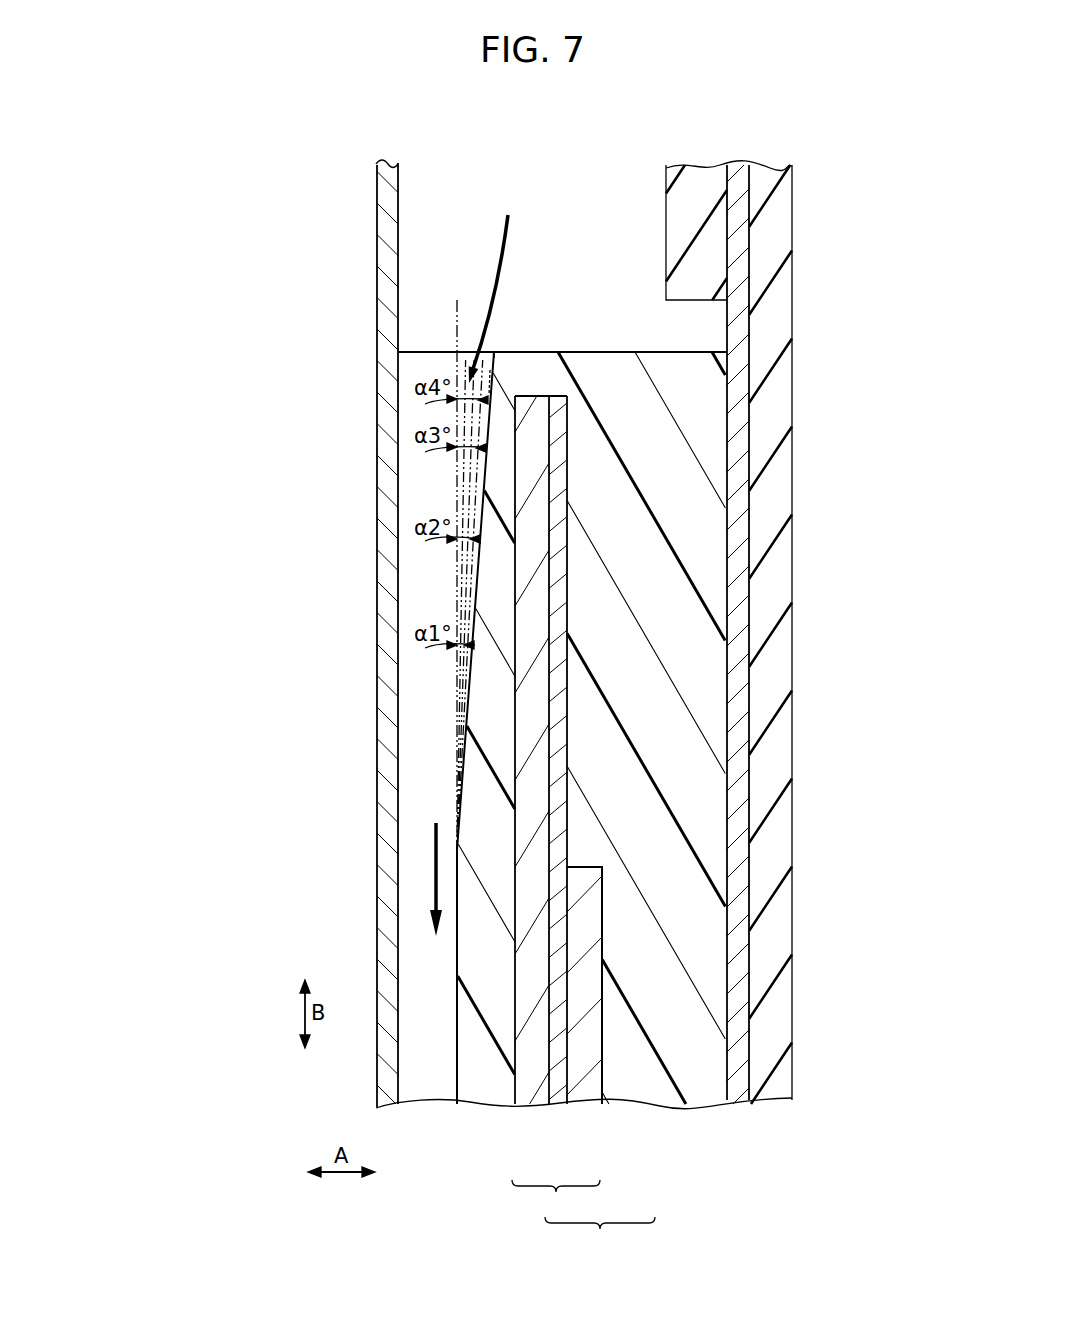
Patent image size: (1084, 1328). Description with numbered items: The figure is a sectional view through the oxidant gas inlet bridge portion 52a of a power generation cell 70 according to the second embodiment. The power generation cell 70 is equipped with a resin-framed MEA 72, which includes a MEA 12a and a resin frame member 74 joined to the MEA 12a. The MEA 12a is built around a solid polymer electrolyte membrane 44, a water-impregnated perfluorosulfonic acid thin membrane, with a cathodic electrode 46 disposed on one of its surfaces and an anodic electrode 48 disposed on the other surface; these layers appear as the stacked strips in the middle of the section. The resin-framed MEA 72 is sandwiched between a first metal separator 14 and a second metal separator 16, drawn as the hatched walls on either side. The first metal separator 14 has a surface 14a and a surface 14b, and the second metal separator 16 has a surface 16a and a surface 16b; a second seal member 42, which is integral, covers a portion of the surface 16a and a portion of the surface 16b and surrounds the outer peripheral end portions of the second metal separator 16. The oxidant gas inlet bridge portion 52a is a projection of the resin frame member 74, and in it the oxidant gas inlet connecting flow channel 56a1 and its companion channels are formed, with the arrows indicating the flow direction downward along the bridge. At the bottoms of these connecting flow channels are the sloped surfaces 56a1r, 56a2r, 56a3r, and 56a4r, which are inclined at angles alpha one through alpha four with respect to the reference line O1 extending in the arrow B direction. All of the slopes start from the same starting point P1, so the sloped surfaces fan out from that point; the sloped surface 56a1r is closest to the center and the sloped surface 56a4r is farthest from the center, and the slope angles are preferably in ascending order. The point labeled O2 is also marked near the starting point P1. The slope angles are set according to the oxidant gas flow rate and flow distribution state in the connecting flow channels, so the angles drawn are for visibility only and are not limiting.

The power generation cell 70 is at (636, 109).
The first metal separator 14 is at (388, 635).
The surface of first metal separator 14a is at (400, 216).
The surface of first metal separator 14b is at (378, 278).
The second metal separator 16 is at (727, 634).
The surface of second metal separator 16a is at (725, 226).
The surface of second metal separator 16b is at (751, 249).
The second seal member 42 is at (784, 208).
The oxidant gas inlet bridge portion 52a is at (704, 411).
The solid polymer electrolyte membrane 44 is at (557, 1085).
The cathodic electrode 46 is at (532, 1085).
The anodic electrode 48 is at (582, 1090).
The MEA 12a is at (556, 1199).
The resin-framed MEA 72 is at (600, 1236).
The resin frame member 74 is at (640, 1123).
The oxidant gas inlet connecting flow channel 56a1 is at (416, 883).
The sloped surface 56a1r is at (467, 690).
The sloped surface 56a2r is at (465, 560).
The sloped surface 56a3r is at (463, 477).
The sloped surface 56a4r is at (470, 420).
The reference line O1 is at (459, 565).
The axis O2 is at (494, 286).
The starting point P1 is at (495, 350).